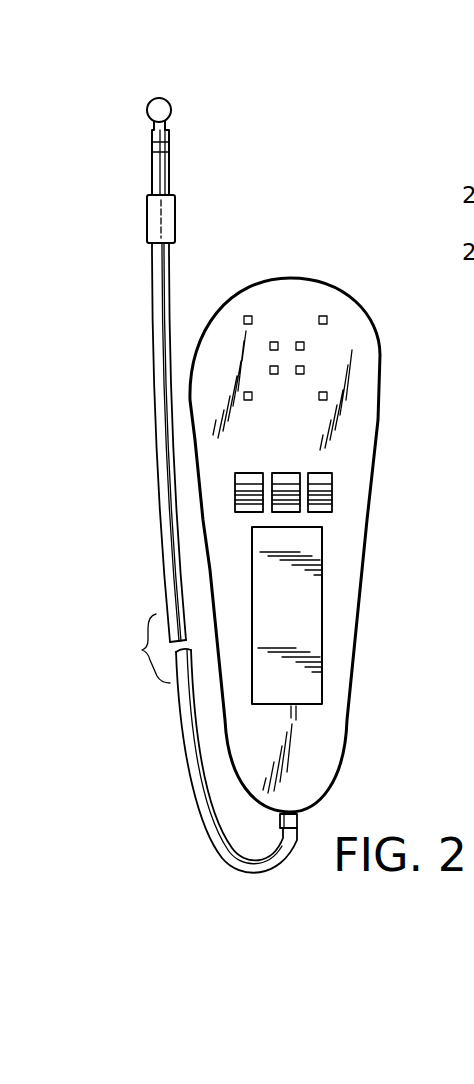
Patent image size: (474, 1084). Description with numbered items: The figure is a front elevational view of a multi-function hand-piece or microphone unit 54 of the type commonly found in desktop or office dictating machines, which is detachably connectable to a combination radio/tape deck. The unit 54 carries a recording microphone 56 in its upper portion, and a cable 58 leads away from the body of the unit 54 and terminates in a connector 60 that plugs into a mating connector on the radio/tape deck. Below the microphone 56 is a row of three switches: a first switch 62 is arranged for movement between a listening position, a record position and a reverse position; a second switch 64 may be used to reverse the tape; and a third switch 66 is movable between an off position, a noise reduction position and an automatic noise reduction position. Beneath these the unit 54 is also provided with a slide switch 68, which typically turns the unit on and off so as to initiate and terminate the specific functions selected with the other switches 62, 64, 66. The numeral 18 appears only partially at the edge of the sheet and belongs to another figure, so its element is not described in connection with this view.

The multi-function hand-piece or microphone unit 54 is at (390, 337).
The recording microphone 56 is at (348, 323).
The cable 58 is at (205, 778).
The connector 60 is at (166, 178).
The first switch 62 is at (322, 505).
The second switch 64 is at (287, 490).
The third switch 66 is at (237, 494).
The slide switch 68 is at (312, 607).
The cut-off numeral 18 is at (459, 400).